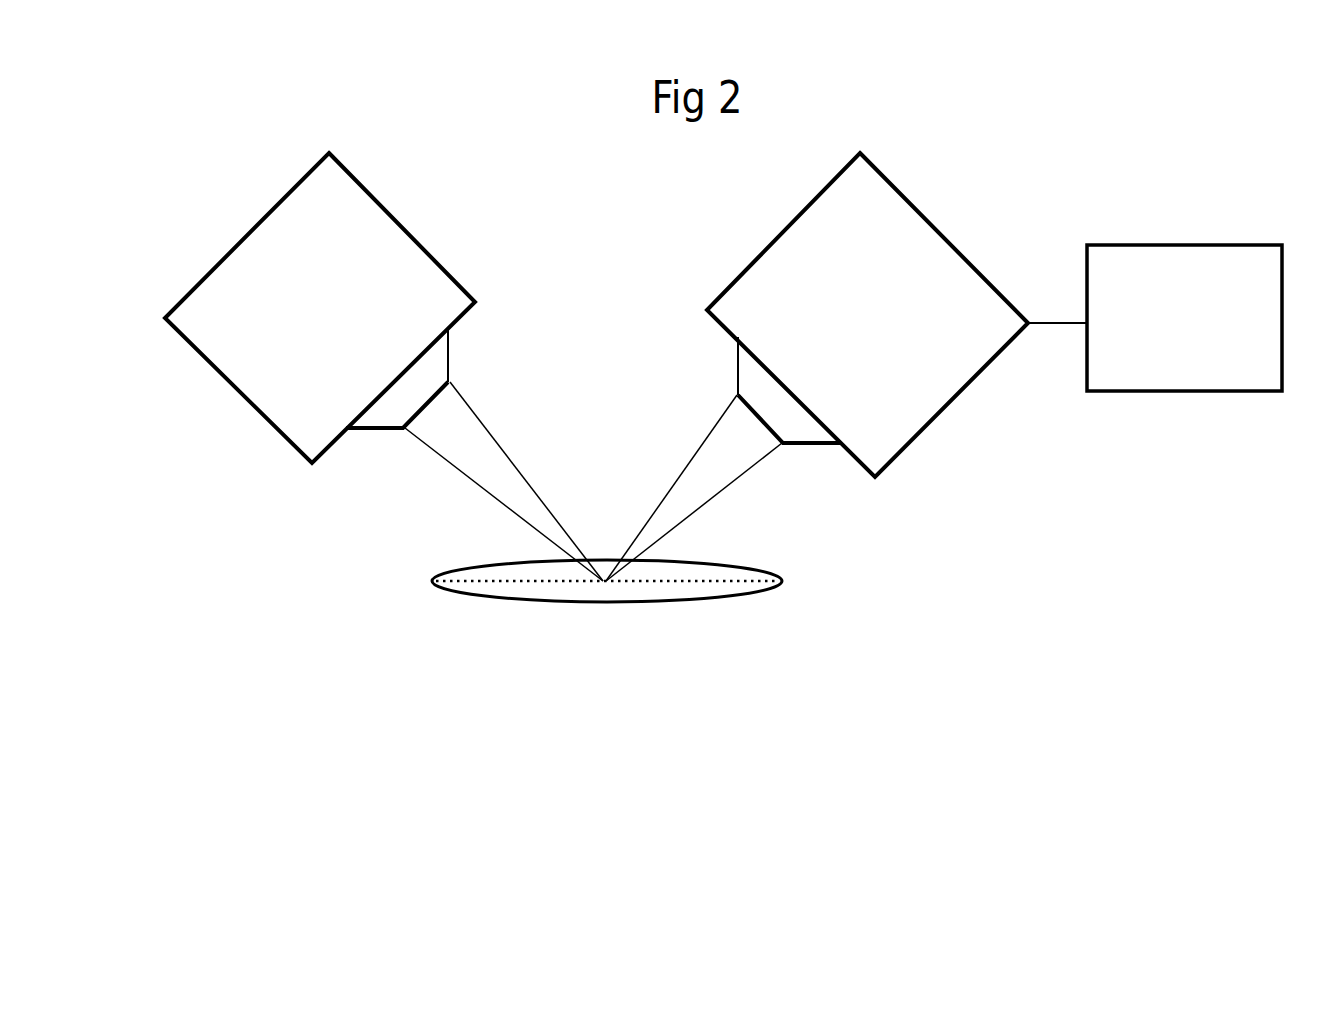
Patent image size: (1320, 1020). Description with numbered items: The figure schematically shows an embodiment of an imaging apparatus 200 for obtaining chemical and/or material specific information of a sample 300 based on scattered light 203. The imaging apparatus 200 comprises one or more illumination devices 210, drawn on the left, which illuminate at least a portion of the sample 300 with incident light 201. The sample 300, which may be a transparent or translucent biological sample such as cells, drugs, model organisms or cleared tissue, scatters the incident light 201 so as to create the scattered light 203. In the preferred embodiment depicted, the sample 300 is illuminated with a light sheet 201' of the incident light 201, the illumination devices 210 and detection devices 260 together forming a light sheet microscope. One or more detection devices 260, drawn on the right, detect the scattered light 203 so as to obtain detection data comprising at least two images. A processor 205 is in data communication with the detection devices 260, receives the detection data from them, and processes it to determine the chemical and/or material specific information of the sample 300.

The imaging apparatus 200 is at (168, 193).
The illumination device 210 is at (320, 308).
The detection device 260 is at (867, 315).
The processor 205 is at (1155, 318).
The incident light 201 is at (504, 481).
The scattered light 203 is at (696, 488).
The sample 300 is at (607, 604).
The light sheet 201' is at (601, 624).